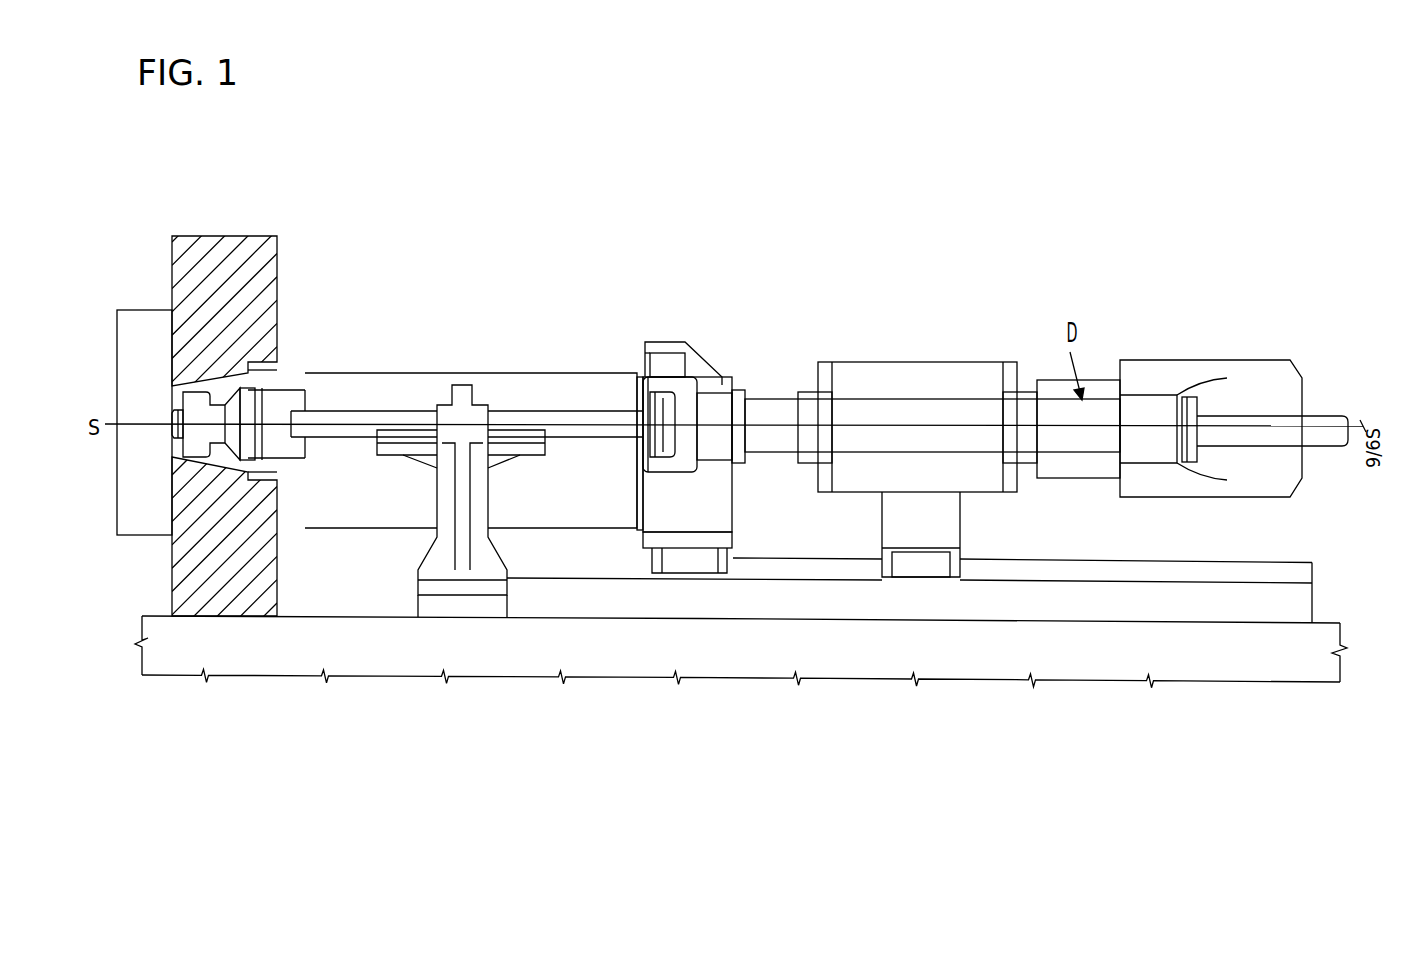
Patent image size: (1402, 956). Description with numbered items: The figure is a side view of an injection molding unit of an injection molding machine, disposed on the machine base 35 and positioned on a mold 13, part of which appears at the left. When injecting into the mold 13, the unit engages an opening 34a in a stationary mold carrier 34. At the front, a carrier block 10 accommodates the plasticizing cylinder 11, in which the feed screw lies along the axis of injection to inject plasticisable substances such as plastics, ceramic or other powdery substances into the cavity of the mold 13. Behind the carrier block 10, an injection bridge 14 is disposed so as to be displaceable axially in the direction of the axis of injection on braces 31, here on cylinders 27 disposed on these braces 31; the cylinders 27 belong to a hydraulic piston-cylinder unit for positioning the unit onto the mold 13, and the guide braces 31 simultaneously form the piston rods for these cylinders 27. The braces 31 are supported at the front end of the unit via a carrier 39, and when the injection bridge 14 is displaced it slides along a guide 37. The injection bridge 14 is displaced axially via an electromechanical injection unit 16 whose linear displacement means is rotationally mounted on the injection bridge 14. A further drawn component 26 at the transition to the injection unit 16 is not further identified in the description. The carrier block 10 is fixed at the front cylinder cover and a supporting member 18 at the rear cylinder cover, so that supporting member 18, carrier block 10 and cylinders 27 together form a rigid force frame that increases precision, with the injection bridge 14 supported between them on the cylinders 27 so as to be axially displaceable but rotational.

The carrier block 10 is at (700, 363).
The plasticizing cylinder 11 is at (607, 390).
The mold 13 is at (147, 335).
The injection bridge 14 is at (937, 375).
The electromechanical injection unit 16 is at (1105, 376).
The supporting member 18 is at (1250, 383).
The flange 26 is at (1030, 385).
The cylinders 27 is at (768, 417).
The braces 31 is at (567, 417).
The stationary mold carrier 34 is at (260, 272).
The opening 34a is at (268, 365).
The machine base 35 is at (675, 655).
The guide 37 is at (1305, 572).
The carrier 39 is at (475, 512).